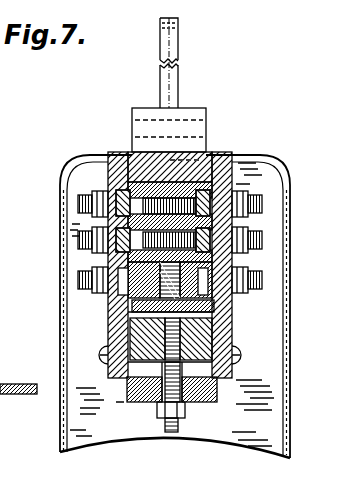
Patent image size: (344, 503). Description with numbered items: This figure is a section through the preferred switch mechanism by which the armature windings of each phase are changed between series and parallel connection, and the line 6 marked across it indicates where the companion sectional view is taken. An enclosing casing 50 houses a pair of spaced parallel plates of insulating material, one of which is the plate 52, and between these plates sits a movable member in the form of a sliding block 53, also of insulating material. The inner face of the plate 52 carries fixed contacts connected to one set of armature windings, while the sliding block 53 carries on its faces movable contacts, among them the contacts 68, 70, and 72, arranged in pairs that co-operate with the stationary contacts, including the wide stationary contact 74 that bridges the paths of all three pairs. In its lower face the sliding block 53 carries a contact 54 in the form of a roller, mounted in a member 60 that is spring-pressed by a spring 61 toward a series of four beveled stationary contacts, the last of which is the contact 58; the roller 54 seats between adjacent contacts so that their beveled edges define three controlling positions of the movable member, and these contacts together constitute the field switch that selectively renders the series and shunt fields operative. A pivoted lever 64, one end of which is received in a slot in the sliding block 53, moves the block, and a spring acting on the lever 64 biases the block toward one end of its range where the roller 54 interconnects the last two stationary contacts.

The section line 6— 6 is at (192, 13).
The enclosing casing 50 is at (72, 205).
The plate of insulating material 52 is at (233, 332).
The sliding block 53 is at (78, 157).
The roller contact 54 is at (110, 348).
The stationary contact 58 is at (115, 415).
The roller-carrying member 60 is at (300, 305).
The spring 61 is at (296, 247).
The pivoted lever 64 is at (181, 88).
The movable contact 68 is at (212, 152).
The movable contact 70 is at (108, 257).
The movable contact 72 is at (107, 297).
The stationary contact 74 is at (107, 316).